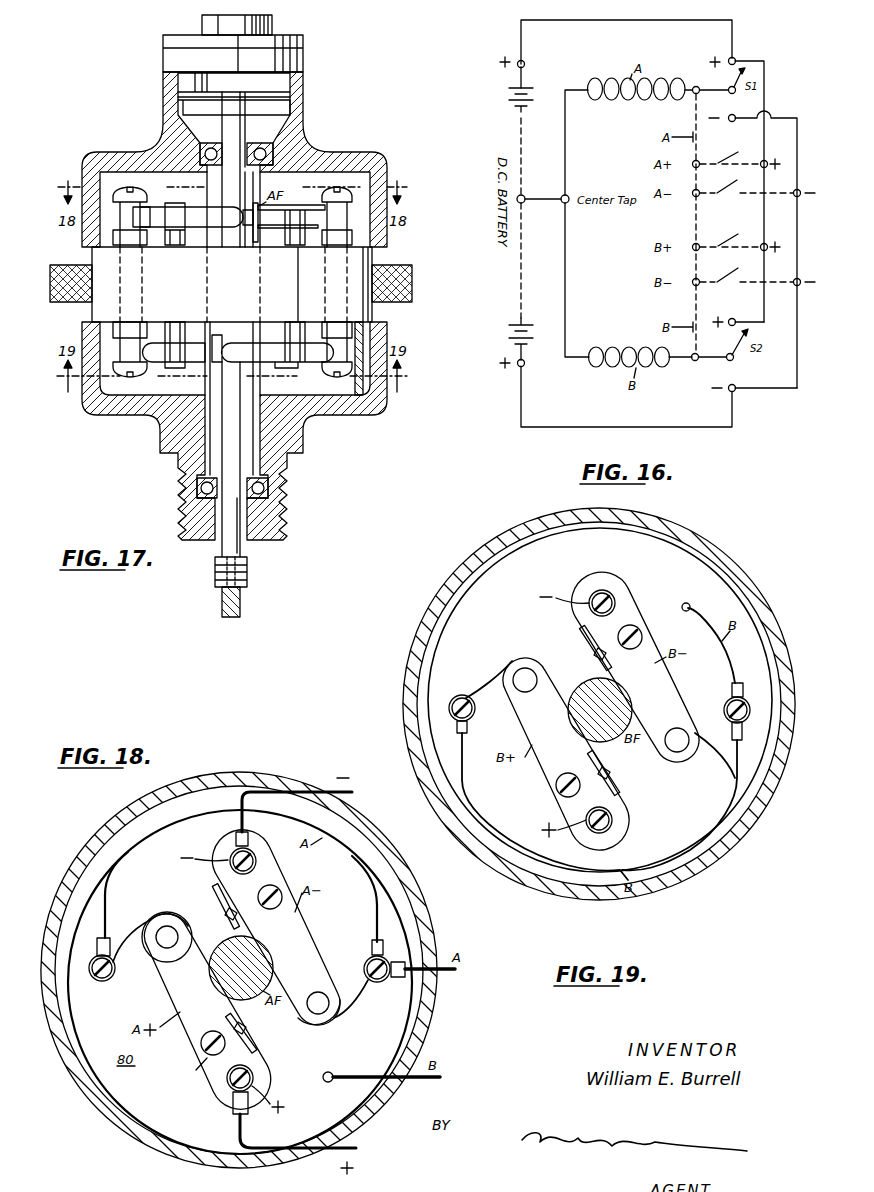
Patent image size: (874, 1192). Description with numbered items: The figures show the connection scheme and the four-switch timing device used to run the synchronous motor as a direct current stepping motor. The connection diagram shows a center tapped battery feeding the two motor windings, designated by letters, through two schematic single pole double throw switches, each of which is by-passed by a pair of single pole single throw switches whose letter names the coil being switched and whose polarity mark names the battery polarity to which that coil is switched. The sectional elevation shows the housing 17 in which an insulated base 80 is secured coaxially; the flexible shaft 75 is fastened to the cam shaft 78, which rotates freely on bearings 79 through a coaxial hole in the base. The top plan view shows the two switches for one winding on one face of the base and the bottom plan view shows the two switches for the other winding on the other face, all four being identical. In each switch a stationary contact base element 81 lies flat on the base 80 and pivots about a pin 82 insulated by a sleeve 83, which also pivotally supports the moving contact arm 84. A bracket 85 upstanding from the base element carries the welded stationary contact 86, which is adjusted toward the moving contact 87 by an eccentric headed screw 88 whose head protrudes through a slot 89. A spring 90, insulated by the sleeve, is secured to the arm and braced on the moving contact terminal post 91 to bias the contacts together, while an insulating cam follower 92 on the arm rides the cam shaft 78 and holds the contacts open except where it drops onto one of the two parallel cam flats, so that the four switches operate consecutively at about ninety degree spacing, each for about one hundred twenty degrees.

In FIG. 19, the housing 17 is at (744, 573).
In FIG. 18, the housing 17 is at (208, 772).
In FIG. 17, the flexible shaft 75 is at (222, 602).
In FIG. 17, the cam shaft 78 is at (236, 186).
In FIG. 19, the cam shaft 78 is at (586, 688).
In FIG. 18, the cam shaft 78 is at (230, 945).
In FIG. 17, the bearings 79 is at (204, 152).
In FIG. 17, the insulated base 80 is at (252, 285).
In FIG. 19, the insulated base 80 is at (536, 624).
In FIG. 17, the stationary contact base element 81 is at (198, 247).
In FIG. 18, the stationary contact base element 81 is at (168, 999).
In FIG. 17, the pin 82 is at (176, 205).
In FIG. 18, the pin 82 is at (179, 937).
In FIG. 18, the sleeve 83 is at (189, 928).
In FIG. 17, the moving contact arm 84 is at (210, 224).
In FIG. 18, the moving contact arm 84 is at (194, 982).
In FIG. 17, the bracket 85 is at (248, 233).
In FIG. 18, the bracket 85 is at (258, 1038).
In FIG. 17, the stationary contact 86 is at (246, 210).
In FIG. 18, the stationary contact 86 is at (246, 1070).
In FIG. 18, the moving contact 87 is at (232, 1078).
In FIG. 18, the eccentric headed screw 88 is at (201, 1047).
In FIG. 18, the slot 89 is at (197, 1069).
In FIG. 17, the spring 90 is at (156, 210).
In FIG. 18, the spring 90 is at (142, 922).
In FIG. 17, the moving contact terminal post 91 is at (136, 190).
In FIG. 18, the moving contact terminal post 91 is at (92, 978).
In FIG. 18, the insulating cam follower 92 is at (210, 1003).